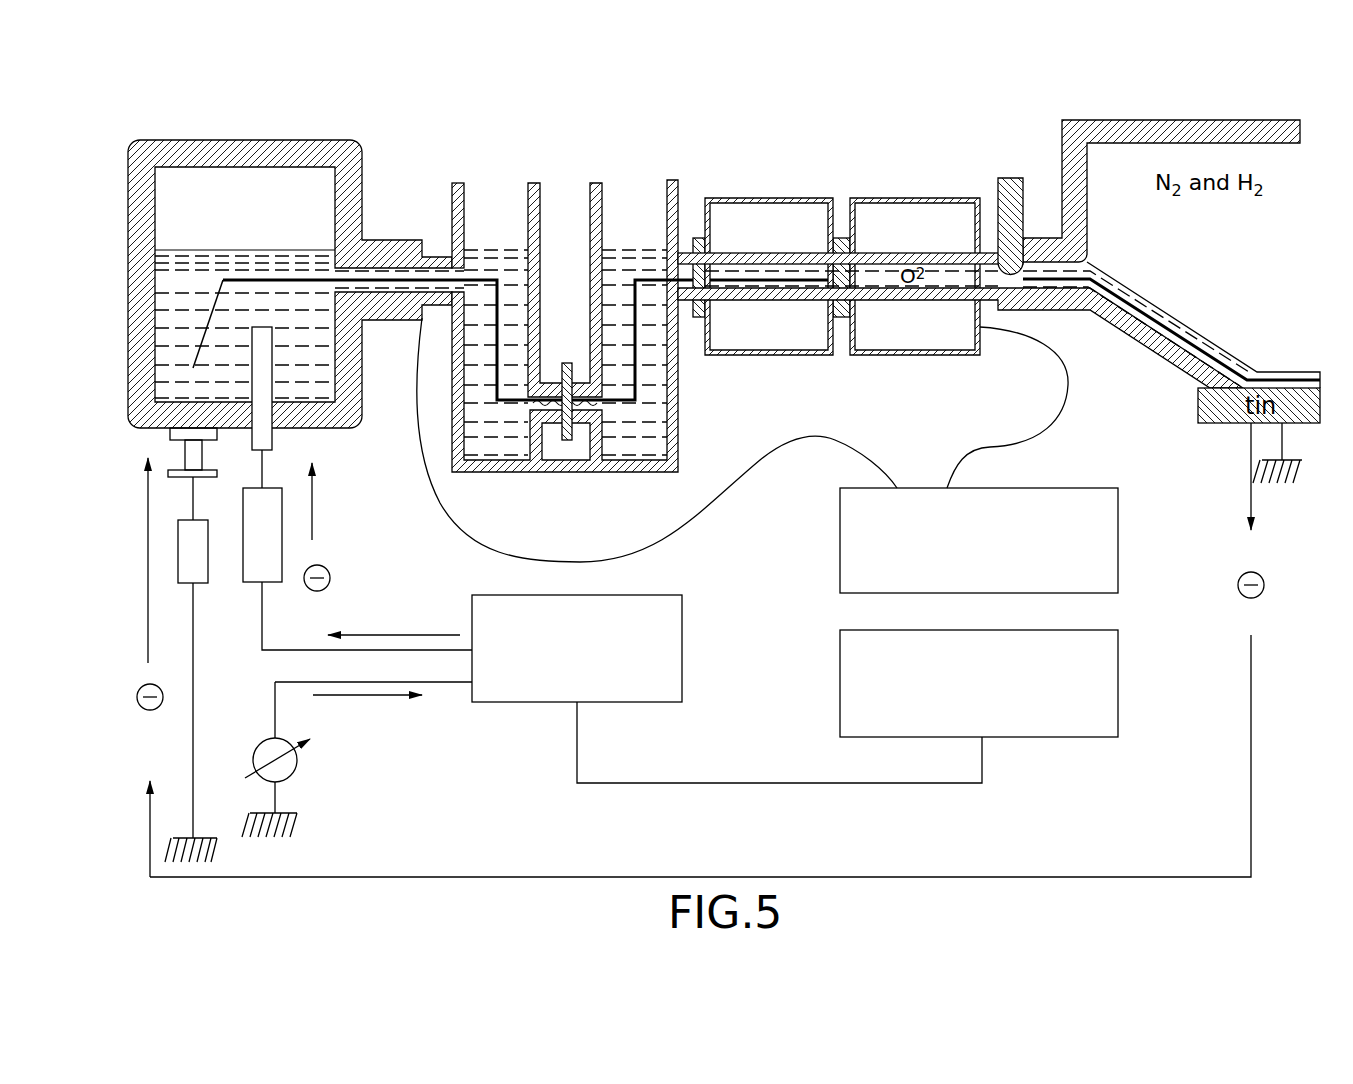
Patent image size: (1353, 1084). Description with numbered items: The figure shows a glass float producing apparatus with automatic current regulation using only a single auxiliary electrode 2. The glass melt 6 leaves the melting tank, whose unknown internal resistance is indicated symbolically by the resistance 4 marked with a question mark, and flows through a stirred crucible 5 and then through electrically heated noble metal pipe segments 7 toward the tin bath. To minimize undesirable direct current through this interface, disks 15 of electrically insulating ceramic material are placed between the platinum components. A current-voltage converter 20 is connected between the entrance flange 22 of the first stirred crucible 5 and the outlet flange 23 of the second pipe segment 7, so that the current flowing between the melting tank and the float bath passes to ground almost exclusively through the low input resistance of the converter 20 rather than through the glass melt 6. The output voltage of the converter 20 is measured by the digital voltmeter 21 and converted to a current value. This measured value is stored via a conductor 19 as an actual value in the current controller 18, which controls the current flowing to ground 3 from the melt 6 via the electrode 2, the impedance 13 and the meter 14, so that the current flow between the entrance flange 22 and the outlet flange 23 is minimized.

The electrode 2 is at (248, 377).
The ground 3 is at (295, 825).
The resistance 4 is at (208, 553).
The stirred crucible 5 is at (497, 472).
The glass melt 6 is at (167, 262).
The pipe segment 7 is at (763, 355).
The impedance 13 is at (282, 525).
The meter 14 is at (297, 777).
The disks 15 is at (567, 440).
The current controller 18 is at (523, 702).
The conductor 19 is at (725, 783).
The current-voltage converter 20 is at (840, 543).
The digital voltmeter 21 is at (840, 683).
The entrance flange 22 is at (435, 257).
The outlet flange 23 is at (987, 247).